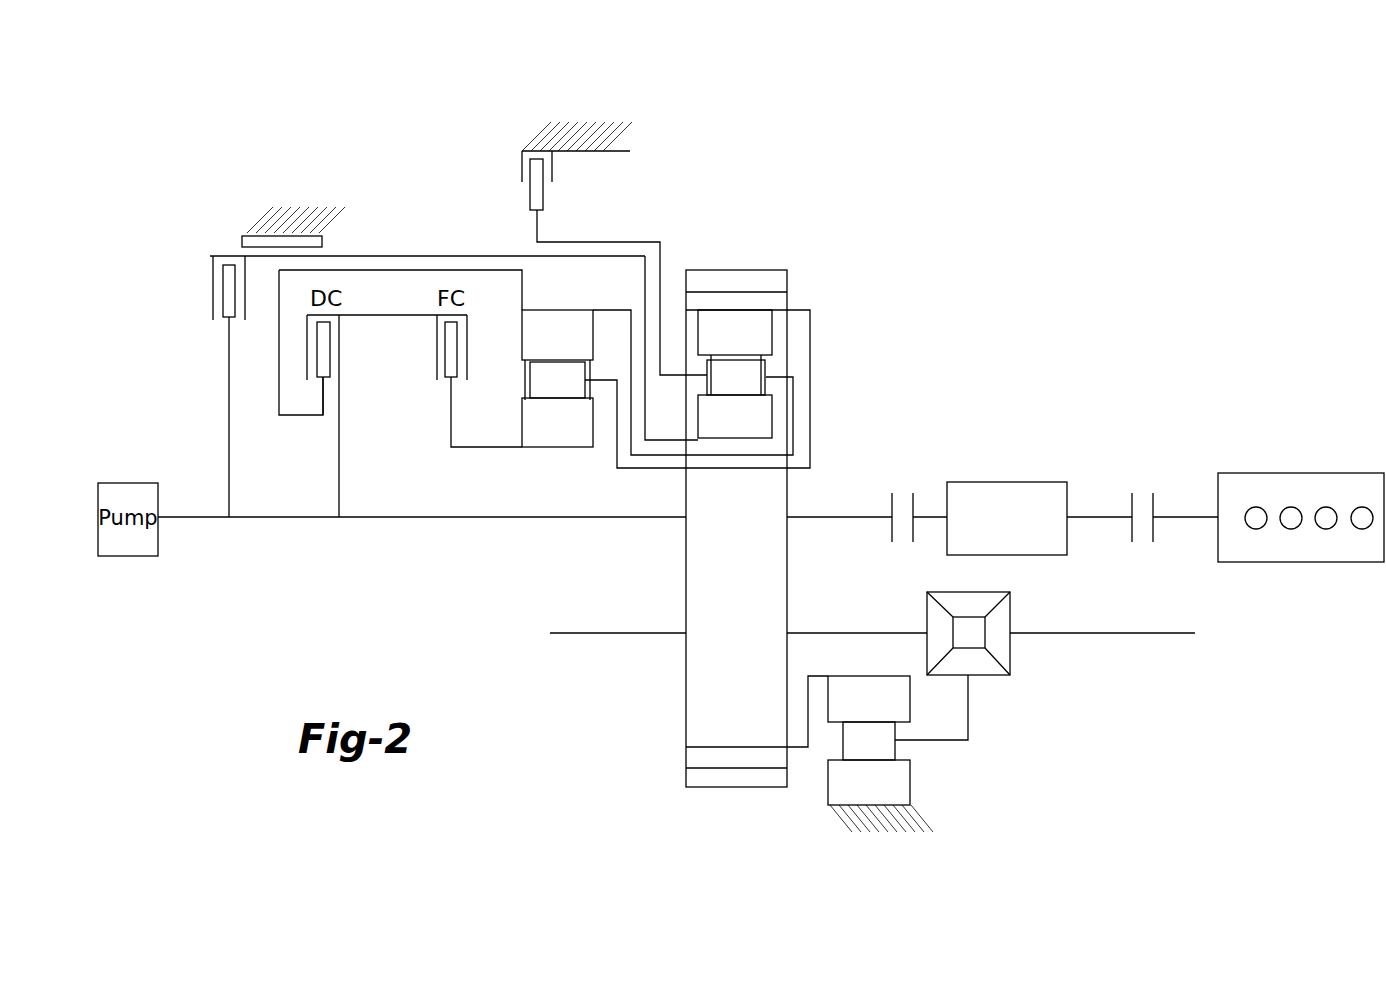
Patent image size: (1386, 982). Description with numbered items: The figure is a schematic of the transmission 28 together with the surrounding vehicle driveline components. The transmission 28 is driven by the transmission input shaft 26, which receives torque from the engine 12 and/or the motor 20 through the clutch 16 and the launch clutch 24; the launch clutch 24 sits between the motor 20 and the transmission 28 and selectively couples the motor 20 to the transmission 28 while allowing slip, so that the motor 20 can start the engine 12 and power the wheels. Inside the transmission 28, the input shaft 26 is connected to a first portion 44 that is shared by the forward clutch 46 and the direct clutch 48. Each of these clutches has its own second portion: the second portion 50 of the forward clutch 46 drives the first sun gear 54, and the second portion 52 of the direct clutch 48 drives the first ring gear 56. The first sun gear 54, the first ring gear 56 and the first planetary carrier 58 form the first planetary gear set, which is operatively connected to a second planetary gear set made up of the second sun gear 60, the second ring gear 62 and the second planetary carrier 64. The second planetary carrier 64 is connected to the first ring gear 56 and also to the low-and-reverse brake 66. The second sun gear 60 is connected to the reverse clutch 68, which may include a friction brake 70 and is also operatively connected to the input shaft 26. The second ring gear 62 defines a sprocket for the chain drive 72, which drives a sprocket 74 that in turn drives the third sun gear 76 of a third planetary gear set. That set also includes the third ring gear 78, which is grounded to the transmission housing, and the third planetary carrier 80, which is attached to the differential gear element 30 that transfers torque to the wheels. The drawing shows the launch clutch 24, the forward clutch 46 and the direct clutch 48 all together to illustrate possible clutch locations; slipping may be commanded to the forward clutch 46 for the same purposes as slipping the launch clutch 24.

The engine 12 is at (1308, 473).
The clutch 16 is at (1132, 542).
The motor 20 is at (1007, 482).
The launch clutch 24 is at (892, 542).
The transmission input shaft 26 is at (412, 517).
The transmission 28 is at (412, 158).
The differential gear element 30 is at (1013, 658).
The first portion of forward clutch 44 is at (393, 315).
The forward clutch 46 is at (437, 338).
The direct clutch 48 is at (307, 338).
The second portion of forward clutch 50 is at (445, 360).
The second portion of direct clutch 52 is at (317, 360).
The first sun gear 54 is at (560, 447).
The first ring gear 56 is at (565, 310).
The first planetary carrier 58 is at (522, 378).
The second sun gear 60 is at (772, 418).
The second ring gear 62 is at (772, 338).
The second planetary carrier 64 is at (766, 364).
The low-and-reverse brake 66 is at (520, 170).
The reverse clutch 68 is at (210, 256).
The friction brake 70 is at (242, 240).
The chain drive 72 is at (787, 283).
The sprocket 74 is at (737, 790).
The third sun gear 76 is at (868, 676).
The third ring gear 78 is at (910, 783).
The third planetary carrier 80 is at (895, 748).